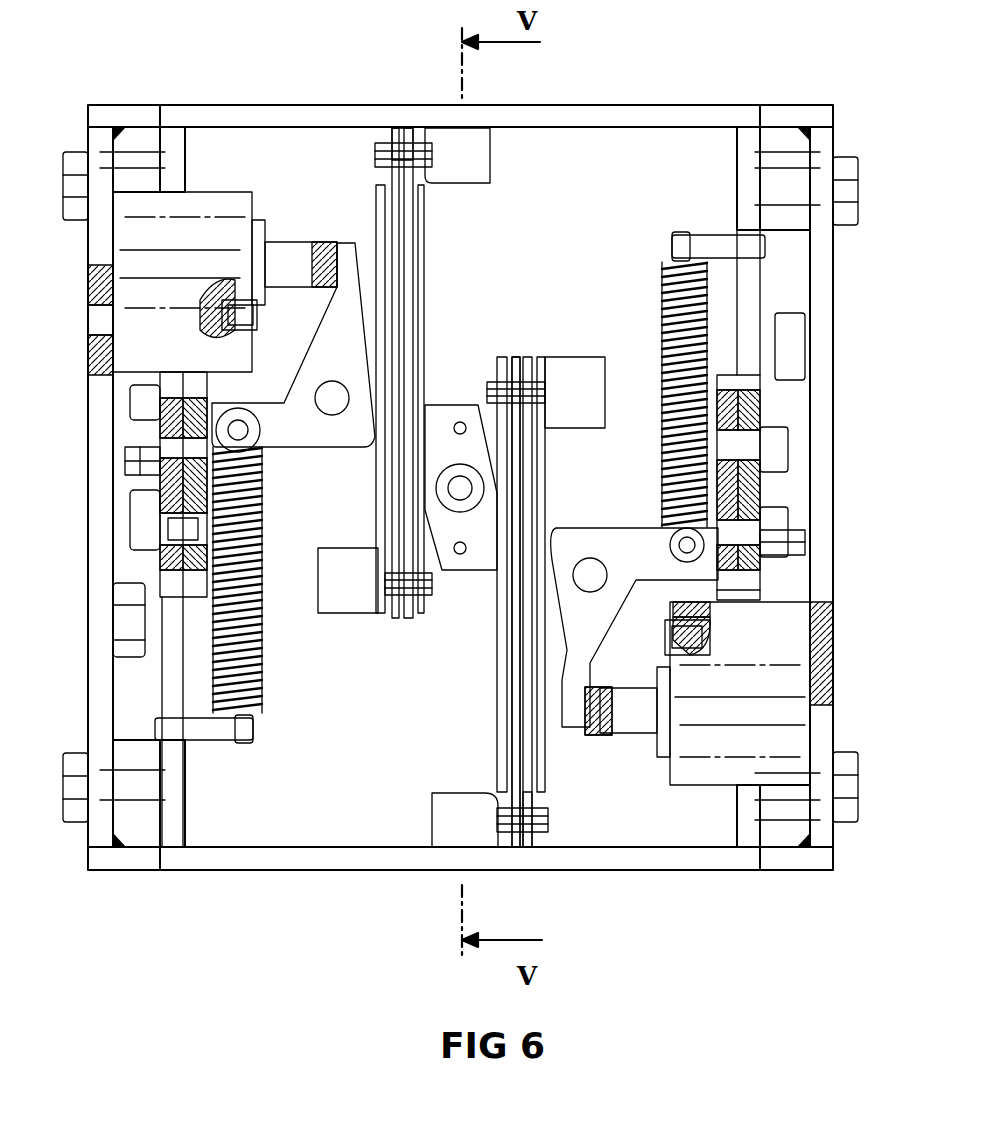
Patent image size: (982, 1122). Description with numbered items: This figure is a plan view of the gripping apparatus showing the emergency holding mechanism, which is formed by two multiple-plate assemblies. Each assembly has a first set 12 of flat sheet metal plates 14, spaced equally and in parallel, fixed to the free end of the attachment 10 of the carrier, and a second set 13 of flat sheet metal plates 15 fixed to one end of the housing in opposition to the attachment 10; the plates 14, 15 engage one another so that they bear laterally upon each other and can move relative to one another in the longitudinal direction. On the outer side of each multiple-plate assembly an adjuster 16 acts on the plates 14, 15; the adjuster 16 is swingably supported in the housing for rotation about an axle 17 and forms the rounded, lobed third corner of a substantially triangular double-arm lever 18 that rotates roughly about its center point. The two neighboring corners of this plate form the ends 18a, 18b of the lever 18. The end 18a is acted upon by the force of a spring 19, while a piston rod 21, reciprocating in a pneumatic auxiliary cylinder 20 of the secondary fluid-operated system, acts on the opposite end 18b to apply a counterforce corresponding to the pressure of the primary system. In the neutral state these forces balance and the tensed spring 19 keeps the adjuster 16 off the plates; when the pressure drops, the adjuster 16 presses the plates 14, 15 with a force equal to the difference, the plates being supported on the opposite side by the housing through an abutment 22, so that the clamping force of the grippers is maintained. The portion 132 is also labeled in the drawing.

The attachment 10 is at (340, 600).
The first set of flat sheet metal plates 12 is at (515, 355).
The second set of flat sheet metal plates 13 is at (395, 120).
The lamella end section 132 is at (400, 622).
The flat sheet metal plate 14 is at (538, 365).
The flat sheet metal plate 15 is at (515, 835).
The adjuster 16 is at (565, 528).
The axle 17 is at (590, 575).
The double-arm lever 18 is at (325, 365).
The end of the double-arm lever 18a is at (700, 545).
The end of the double-arm lever 18b is at (600, 690).
The spring 19 is at (232, 672).
The pneumatic auxiliary cylinder 20 is at (205, 200).
The piston rod 21 is at (627, 717).
The abutment 22 is at (478, 548).